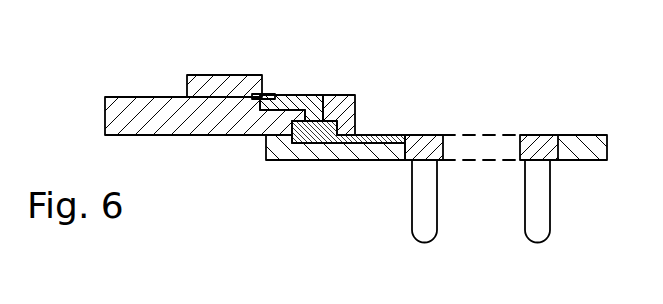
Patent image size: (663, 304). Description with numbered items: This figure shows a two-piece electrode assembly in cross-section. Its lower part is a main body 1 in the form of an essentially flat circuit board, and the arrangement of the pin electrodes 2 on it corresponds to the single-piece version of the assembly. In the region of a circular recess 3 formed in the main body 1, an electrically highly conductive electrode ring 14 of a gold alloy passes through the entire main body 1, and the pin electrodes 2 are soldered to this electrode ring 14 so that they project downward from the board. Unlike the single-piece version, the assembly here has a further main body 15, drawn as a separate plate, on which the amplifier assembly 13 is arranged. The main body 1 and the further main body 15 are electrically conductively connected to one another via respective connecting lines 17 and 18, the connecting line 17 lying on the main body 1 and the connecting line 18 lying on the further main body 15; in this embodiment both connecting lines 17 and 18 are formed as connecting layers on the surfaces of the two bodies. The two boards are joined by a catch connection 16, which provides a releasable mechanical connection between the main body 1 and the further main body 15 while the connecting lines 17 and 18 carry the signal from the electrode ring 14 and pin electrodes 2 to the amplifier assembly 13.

The main body 1 is at (273, 162).
The pin electrodes 2 is at (427, 228).
The recess 3 is at (465, 152).
The amplifier assembly 13 is at (212, 82).
The electrode ring 14 is at (530, 160).
The further main body 15 is at (127, 115).
The catch connection 16 is at (323, 118).
The connecting line 17 is at (333, 161).
The connecting line 18 is at (295, 105).